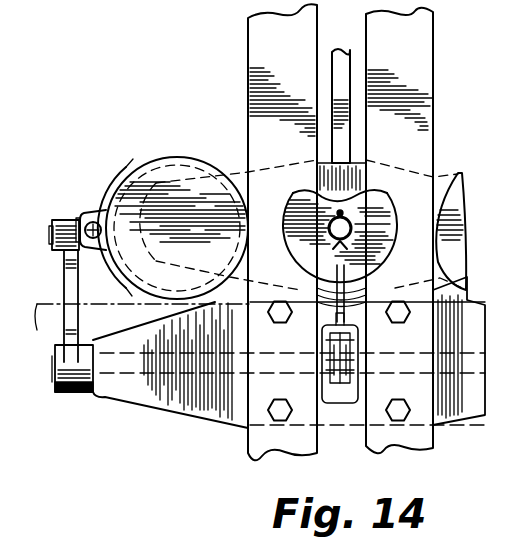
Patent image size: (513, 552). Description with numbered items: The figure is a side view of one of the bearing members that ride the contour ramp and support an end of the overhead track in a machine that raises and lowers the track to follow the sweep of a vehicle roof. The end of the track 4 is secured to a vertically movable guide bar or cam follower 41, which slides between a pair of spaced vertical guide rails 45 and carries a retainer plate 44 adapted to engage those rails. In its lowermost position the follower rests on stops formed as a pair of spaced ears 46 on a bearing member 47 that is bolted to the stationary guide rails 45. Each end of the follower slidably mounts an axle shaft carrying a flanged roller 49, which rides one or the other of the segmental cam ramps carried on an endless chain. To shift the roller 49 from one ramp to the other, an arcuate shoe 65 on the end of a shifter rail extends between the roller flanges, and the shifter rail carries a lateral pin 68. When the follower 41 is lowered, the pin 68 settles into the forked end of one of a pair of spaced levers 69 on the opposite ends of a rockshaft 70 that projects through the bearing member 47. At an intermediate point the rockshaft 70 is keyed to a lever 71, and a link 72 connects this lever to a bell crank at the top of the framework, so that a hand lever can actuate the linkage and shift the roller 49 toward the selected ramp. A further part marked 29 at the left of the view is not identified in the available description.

The track 4 is at (350, 78).
The frame 29 is at (28, 150).
The cam follower 41 is at (237, 178).
The retainer plate 44 is at (392, 203).
The guide rails 45 is at (258, 440).
The spaced ears 46 is at (455, 282).
The bearing member 47 is at (170, 410).
The flanged roller 49 is at (158, 180).
The arcuate shoe 65 is at (119, 180).
The lateral pin 68 is at (52, 228).
The spaced levers 69 is at (64, 272).
The rockshaft 70 is at (122, 398).
The lever 71 is at (322, 372).
The link 72 is at (322, 268).